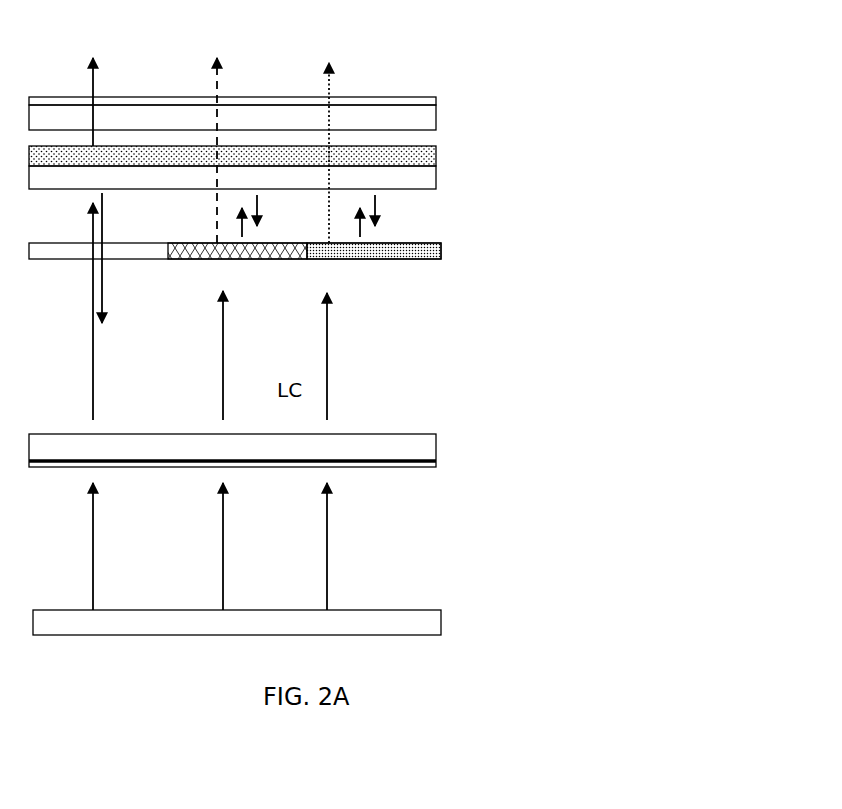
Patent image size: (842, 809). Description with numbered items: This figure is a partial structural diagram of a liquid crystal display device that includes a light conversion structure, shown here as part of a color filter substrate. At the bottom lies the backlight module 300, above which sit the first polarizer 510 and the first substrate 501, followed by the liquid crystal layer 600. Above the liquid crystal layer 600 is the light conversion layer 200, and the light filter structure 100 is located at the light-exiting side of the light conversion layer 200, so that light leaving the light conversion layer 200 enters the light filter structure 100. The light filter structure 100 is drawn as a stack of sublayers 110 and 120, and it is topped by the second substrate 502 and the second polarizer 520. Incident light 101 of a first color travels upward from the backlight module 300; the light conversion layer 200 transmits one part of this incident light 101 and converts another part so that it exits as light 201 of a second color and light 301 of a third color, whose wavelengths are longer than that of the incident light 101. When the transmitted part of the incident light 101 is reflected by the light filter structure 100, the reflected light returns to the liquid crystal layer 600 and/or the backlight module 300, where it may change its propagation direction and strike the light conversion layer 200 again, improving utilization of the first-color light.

The incident light of first color 101 is at (467, 542).
The light of second color 201 is at (224, 134).
The light of third color 301 is at (334, 135).
The second polarizer 520 is at (233, 97).
The second substrate 502 is at (375, 115).
The color filter layer 110 is at (375, 157).
The black matrix / reflective layer 120 is at (375, 182).
The light filter structure 100 is at (289, 158).
The light conversion layer 200 is at (441, 243).
The liquid crystal layer 600 is at (425, 332).
The first substrate 501 is at (436, 445).
The first polarizer 510 is at (415, 467).
The backlight module 300 is at (434, 620).